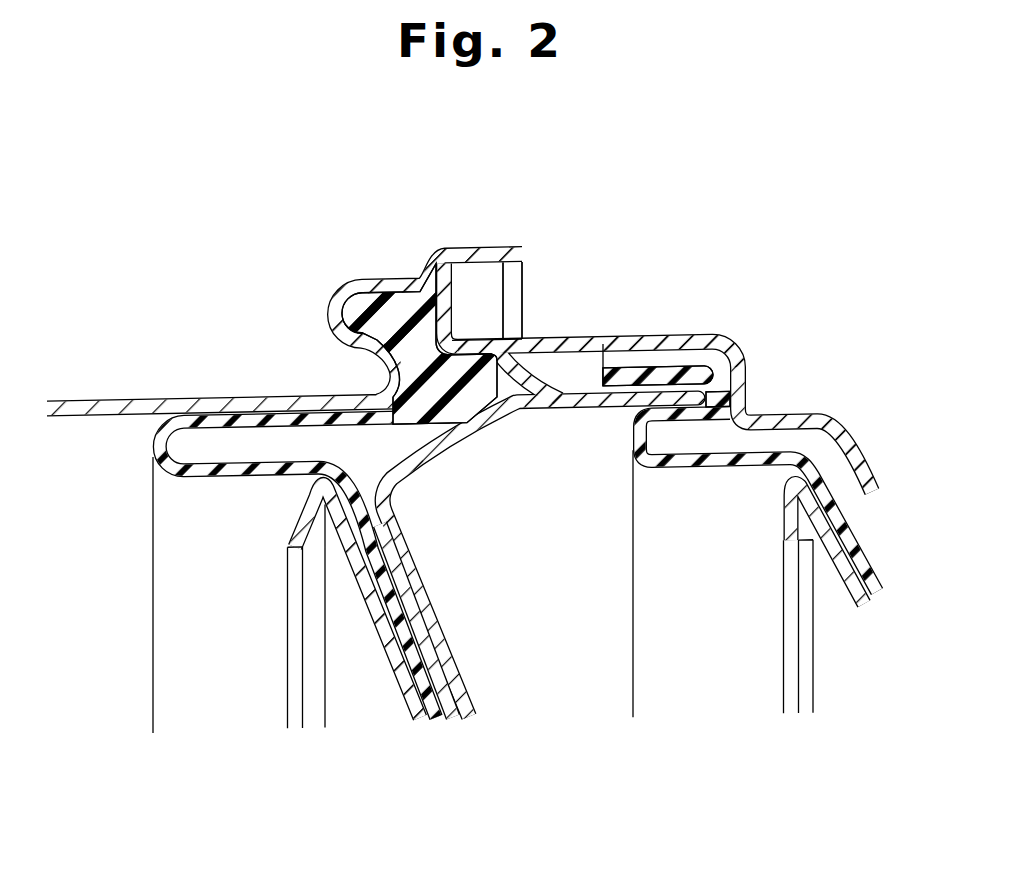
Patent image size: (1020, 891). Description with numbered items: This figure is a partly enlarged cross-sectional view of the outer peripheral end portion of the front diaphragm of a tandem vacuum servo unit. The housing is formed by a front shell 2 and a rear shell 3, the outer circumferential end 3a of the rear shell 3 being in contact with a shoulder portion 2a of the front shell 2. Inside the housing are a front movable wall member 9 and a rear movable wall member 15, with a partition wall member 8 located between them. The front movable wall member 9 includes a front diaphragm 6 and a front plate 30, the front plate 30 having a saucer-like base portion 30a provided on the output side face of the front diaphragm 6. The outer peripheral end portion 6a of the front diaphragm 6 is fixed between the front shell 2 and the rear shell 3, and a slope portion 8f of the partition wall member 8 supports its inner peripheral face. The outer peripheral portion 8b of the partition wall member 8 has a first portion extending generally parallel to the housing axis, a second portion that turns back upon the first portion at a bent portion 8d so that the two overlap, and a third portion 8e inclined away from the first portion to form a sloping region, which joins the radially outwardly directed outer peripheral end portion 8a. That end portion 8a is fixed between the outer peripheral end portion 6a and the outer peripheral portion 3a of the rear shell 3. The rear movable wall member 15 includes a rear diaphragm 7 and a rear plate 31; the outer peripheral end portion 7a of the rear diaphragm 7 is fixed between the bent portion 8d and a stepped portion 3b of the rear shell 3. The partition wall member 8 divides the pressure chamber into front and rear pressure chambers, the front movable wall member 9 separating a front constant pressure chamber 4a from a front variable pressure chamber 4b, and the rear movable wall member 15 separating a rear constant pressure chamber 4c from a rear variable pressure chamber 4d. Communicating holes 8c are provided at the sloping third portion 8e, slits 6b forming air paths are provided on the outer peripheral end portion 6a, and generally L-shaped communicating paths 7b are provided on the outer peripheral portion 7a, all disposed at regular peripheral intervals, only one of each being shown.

The front shell 2 is at (165, 398).
The shoulder portion 2a is at (431, 268).
The rear shell 3 is at (730, 350).
The outer circumferential end of the rear shell 3a is at (446, 302).
The stepped portion of the rear shell 3b is at (720, 339).
The front constant pressure chamber 4a is at (234, 616).
The front variable pressure chamber 4b is at (371, 459).
The rear constant pressure chamber 4c is at (724, 624).
The rear variable pressure chamber 4d is at (830, 456).
The front diaphragm 6 is at (200, 468).
The outer peripheral end portion of the front diaphragm 6a is at (362, 305).
The slit 6b is at (460, 414).
The rear diaphragm 7 is at (750, 467).
The outer peripheral end portion of the rear diaphragm 7a is at (730, 372).
The communicating path 7b is at (724, 415).
The partition wall member 8 is at (421, 567).
The outer peripheral end portion of the partition wall member 8a is at (450, 324).
The outer peripheral portion of the partition wall member 8b is at (587, 412).
The communicating hole 8c is at (573, 348).
The bent portion 8d is at (700, 404).
The third portion 8e is at (512, 404).
The slope portion 8f is at (437, 455).
The front movable wall member 9 is at (426, 640).
The rear movable wall member 15 is at (768, 670).
The front plate 30 is at (289, 660).
The base portion 30a is at (393, 660).
The rear plate 31 is at (862, 616).